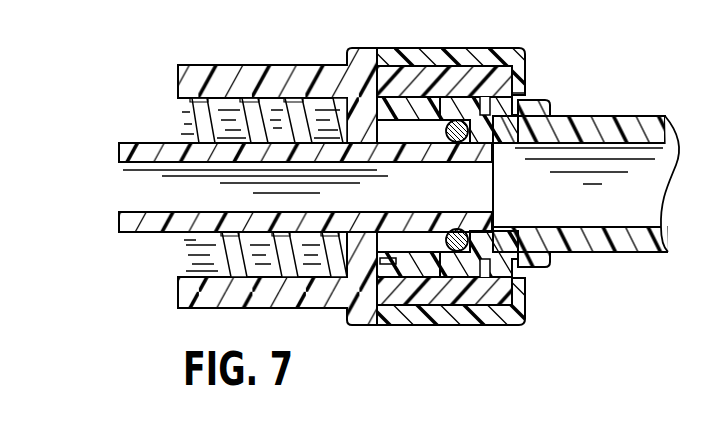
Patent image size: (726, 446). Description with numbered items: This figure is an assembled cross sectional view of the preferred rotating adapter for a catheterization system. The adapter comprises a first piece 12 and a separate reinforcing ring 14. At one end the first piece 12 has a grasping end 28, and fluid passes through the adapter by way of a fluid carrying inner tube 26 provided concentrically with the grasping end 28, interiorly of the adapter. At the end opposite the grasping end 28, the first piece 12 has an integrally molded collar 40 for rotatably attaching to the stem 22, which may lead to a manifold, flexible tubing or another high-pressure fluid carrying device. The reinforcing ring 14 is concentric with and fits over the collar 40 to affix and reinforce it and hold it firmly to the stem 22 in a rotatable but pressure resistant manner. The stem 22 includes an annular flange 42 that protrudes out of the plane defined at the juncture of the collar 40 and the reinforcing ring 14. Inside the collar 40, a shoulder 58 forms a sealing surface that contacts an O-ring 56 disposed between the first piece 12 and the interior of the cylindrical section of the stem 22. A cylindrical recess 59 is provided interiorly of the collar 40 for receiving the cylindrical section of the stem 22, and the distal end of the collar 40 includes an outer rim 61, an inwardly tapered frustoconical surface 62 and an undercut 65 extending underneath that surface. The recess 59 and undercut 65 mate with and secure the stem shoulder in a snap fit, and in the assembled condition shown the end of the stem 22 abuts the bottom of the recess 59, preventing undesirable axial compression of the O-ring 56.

The first piece 12 is at (306, 64).
The reinforcing ring 14 is at (507, 47).
The stem 22 is at (638, 122).
The inner tube 26 is at (158, 143).
The grasping end 28 is at (197, 64).
The collar 40 is at (458, 80).
The annular flange 42 is at (545, 263).
The O-ring 56 is at (436, 146).
The shoulder 58 is at (453, 228).
The cylindrical recess 59 is at (383, 262).
The outer rim 61 is at (527, 72).
The frustoconical surface 62 is at (535, 100).
The undercut 65 is at (483, 107).